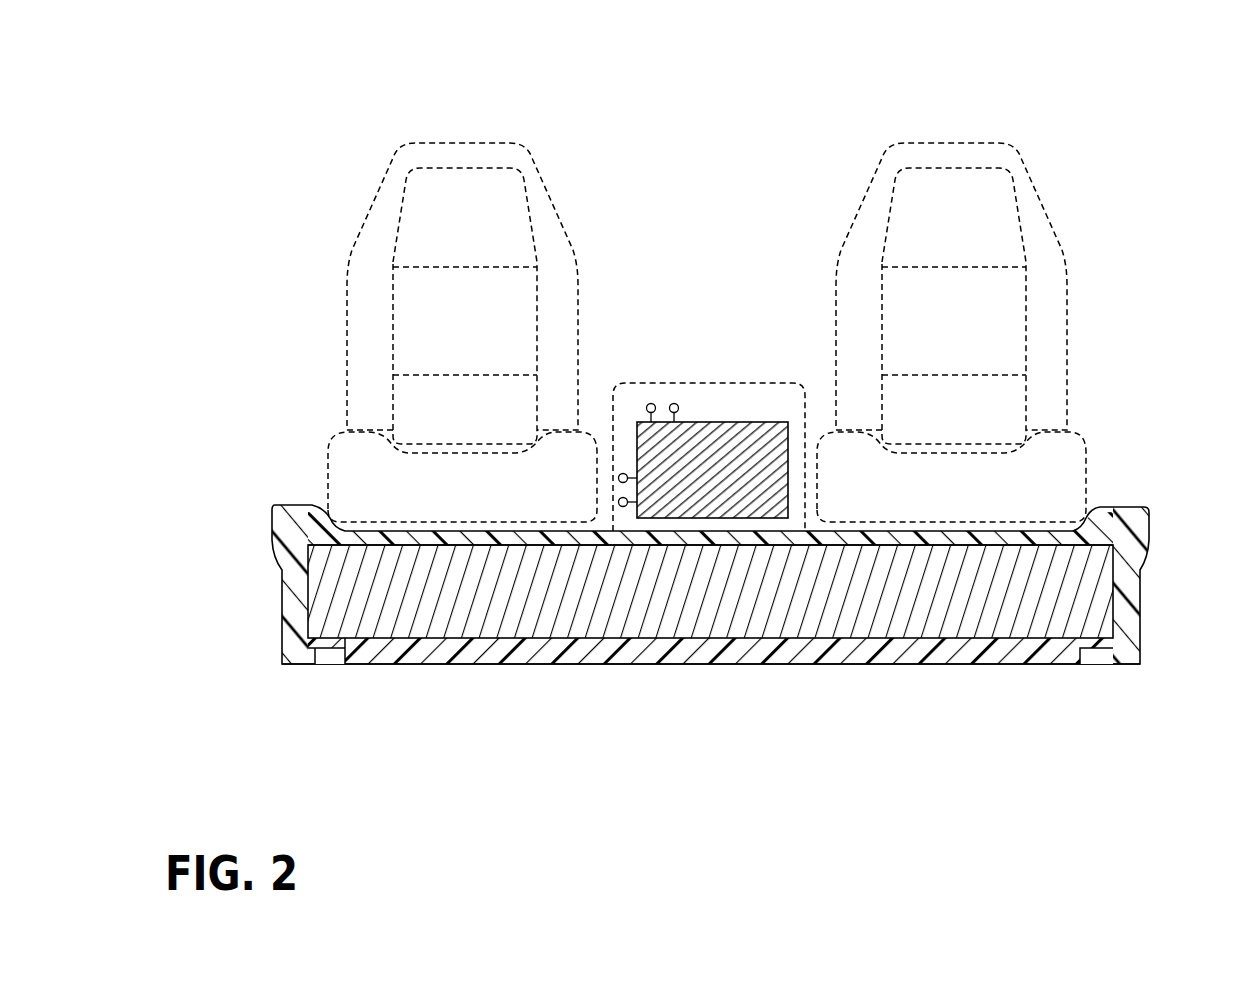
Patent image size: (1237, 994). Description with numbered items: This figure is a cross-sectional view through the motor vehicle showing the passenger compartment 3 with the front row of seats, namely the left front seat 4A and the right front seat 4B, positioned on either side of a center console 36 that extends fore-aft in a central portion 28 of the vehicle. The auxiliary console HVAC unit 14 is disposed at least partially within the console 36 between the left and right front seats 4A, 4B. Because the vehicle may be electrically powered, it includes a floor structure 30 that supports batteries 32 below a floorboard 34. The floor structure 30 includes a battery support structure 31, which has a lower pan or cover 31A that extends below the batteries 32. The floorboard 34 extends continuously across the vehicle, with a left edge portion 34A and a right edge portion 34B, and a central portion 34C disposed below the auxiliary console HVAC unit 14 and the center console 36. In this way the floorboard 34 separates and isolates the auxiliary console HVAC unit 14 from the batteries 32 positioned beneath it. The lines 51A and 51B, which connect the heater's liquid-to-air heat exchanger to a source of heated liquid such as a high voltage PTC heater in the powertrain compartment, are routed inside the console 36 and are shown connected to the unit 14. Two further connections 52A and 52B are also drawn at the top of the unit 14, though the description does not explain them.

The passenger compartment 3 is at (807, 323).
The left front seat 4A is at (395, 158).
The right front seat 4B is at (887, 158).
The auxiliary console HVAC unit 14 is at (627, 417).
The central portion of the vehicle 28 is at (714, 340).
The floor structure 30 is at (1152, 581).
The battery support structure 31 is at (326, 650).
The lower pan or cover 31A is at (700, 667).
The batteries 32 is at (860, 605).
The floorboard 34 is at (1022, 522).
The left edge portion of floorboard 34A is at (294, 505).
The right edge portion of floorboard 34B is at (1120, 505).
The central portion of floorboard 34C is at (792, 527).
The center console 36 is at (730, 380).
The heated liquid line 51A is at (618, 478).
The heated liquid line 51B is at (618, 502).
The first top connector 52A is at (653, 403).
The second top connector 52B is at (675, 403).